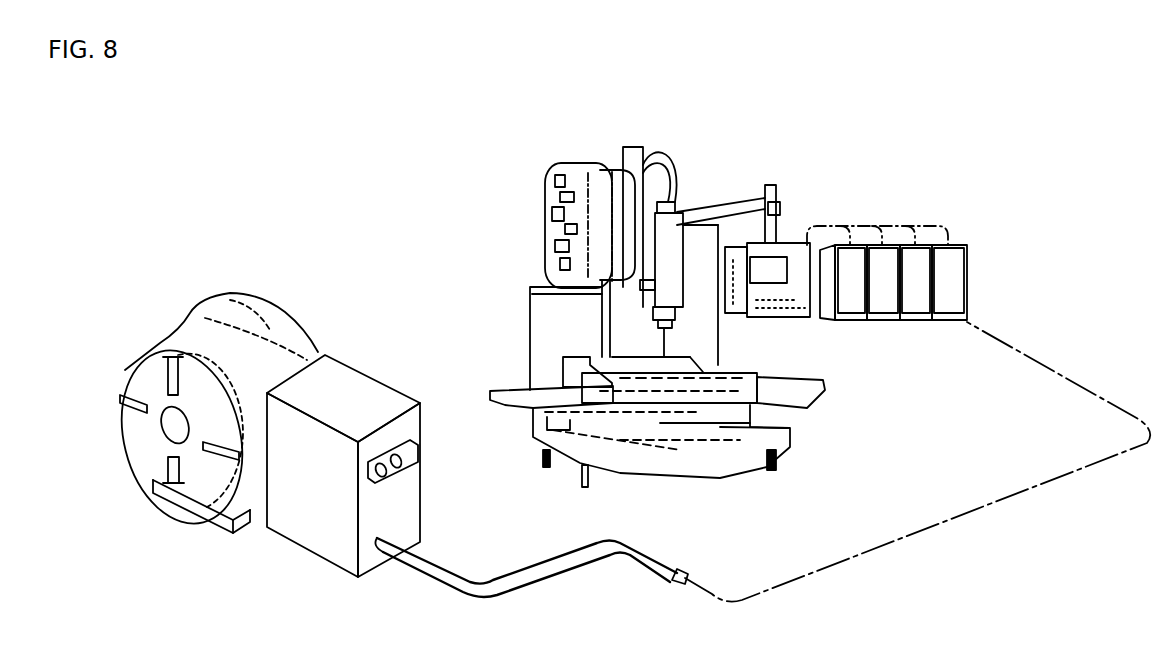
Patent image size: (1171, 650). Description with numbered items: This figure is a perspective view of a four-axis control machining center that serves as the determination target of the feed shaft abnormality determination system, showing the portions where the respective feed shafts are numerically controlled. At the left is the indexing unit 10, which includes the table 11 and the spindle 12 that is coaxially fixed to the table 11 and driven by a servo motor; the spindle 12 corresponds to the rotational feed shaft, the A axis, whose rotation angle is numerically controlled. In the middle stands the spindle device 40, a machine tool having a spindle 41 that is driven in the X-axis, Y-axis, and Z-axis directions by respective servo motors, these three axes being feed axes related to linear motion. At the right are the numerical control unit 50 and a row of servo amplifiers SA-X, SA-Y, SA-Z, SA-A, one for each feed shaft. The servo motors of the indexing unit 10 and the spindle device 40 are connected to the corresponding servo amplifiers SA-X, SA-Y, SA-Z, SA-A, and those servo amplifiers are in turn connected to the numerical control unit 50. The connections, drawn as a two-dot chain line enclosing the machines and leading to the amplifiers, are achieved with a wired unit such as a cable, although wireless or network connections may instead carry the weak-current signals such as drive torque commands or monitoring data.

The indexing unit 10 is at (360, 332).
The table 11 is at (127, 372).
The spindle 12 is at (168, 427).
The spindle device 40 is at (758, 160).
The spindle 41 is at (661, 331).
The numerical control unit 50 is at (792, 242).
The servo amplifier SA-X is at (850, 320).
The servo amplifier SA-Y is at (882, 320).
The servo amplifier SA-Z is at (915, 320).
The servo amplifier SA-A is at (948, 320).